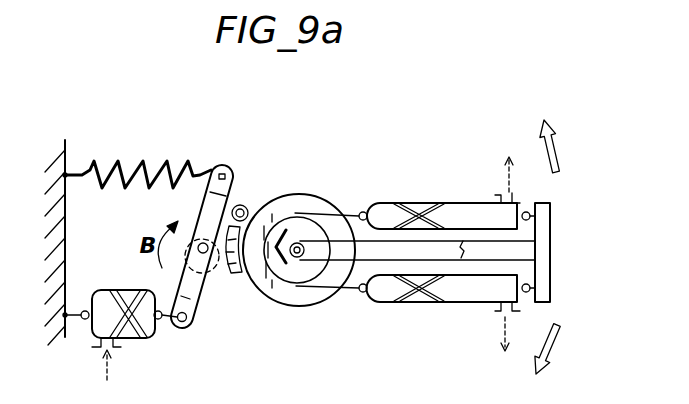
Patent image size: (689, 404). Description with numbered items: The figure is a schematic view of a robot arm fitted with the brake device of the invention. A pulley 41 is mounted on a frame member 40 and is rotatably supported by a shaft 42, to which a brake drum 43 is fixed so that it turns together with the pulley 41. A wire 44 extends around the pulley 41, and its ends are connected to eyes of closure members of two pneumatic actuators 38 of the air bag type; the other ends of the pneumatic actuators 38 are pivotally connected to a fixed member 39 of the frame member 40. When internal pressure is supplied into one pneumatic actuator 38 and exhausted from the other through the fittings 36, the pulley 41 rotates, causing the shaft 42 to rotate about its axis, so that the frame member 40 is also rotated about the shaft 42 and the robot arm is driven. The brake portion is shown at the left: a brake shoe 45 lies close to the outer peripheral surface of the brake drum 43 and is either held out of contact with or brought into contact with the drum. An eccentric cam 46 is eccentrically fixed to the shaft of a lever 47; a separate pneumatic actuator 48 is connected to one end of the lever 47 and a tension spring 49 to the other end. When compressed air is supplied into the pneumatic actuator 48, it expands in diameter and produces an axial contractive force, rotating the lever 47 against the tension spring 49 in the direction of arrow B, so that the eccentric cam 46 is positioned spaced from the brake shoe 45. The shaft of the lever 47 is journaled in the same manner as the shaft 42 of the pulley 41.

The fittings 36 is at (497, 305).
The pneumatic actuators 38 is at (378, 202).
The fixed member 39 is at (550, 278).
The frame member 40 is at (510, 257).
The pulley 41 is at (300, 276).
The shaft 42 is at (295, 242).
The brake drum 43 is at (320, 297).
The wire 44 is at (345, 212).
The brake shoe 45 is at (238, 273).
The eccentric cam 46 is at (216, 280).
The lever 47 is at (222, 163).
The pneumatic actuator 48 is at (137, 340).
The tension spring 49 is at (138, 160).